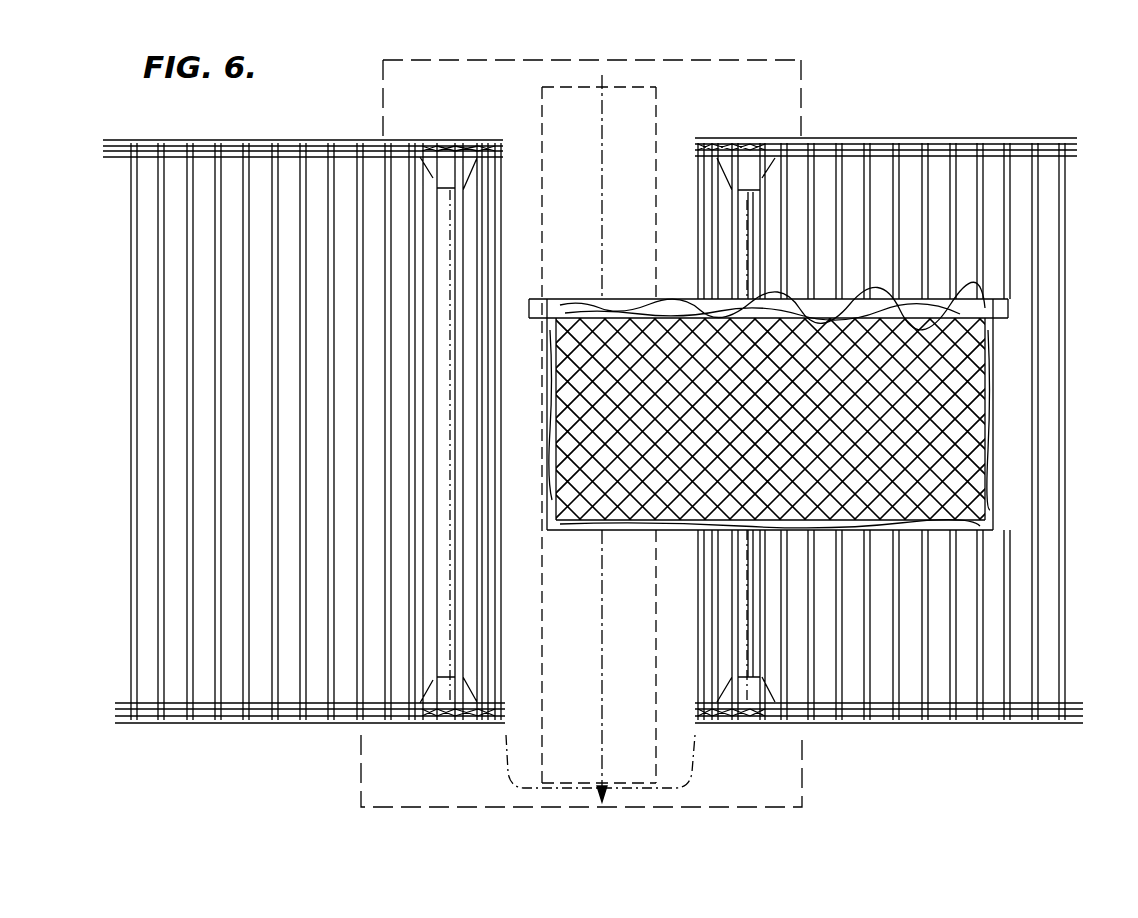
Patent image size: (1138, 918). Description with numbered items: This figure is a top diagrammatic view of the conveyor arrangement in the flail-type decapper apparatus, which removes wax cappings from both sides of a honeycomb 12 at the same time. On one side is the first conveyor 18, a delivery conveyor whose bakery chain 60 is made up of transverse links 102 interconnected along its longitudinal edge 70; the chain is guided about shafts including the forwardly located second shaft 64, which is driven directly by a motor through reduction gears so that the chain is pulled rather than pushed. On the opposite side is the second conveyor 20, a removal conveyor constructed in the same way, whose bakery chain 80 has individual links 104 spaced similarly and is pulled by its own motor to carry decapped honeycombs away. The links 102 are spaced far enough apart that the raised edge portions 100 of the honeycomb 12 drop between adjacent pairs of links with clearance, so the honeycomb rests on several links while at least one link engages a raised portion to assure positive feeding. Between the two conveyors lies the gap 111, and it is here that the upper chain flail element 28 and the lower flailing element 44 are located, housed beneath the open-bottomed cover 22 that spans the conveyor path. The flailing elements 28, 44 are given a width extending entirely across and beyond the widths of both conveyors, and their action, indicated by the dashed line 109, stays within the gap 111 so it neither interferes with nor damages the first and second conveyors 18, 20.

The honeycomb 12 is at (746, 406).
The first conveyor 18 is at (902, 399).
The second conveyor 20 is at (290, 406).
The cover 22 is at (780, 60).
The upper chain flail element 28 is at (610, 427).
The lower flailing element 44 is at (610, 427).
The bakery chain 60 is at (1045, 226).
The second shaft 64 is at (743, 208).
The longitudinal edge 70 is at (1020, 138).
The bakery chain 80 is at (180, 207).
The raised edge portions 100 is at (995, 343).
The links 102 is at (1066, 180).
The links 104 is at (166, 175).
The dashed line 109 is at (542, 122).
The gap 111 is at (608, 800).